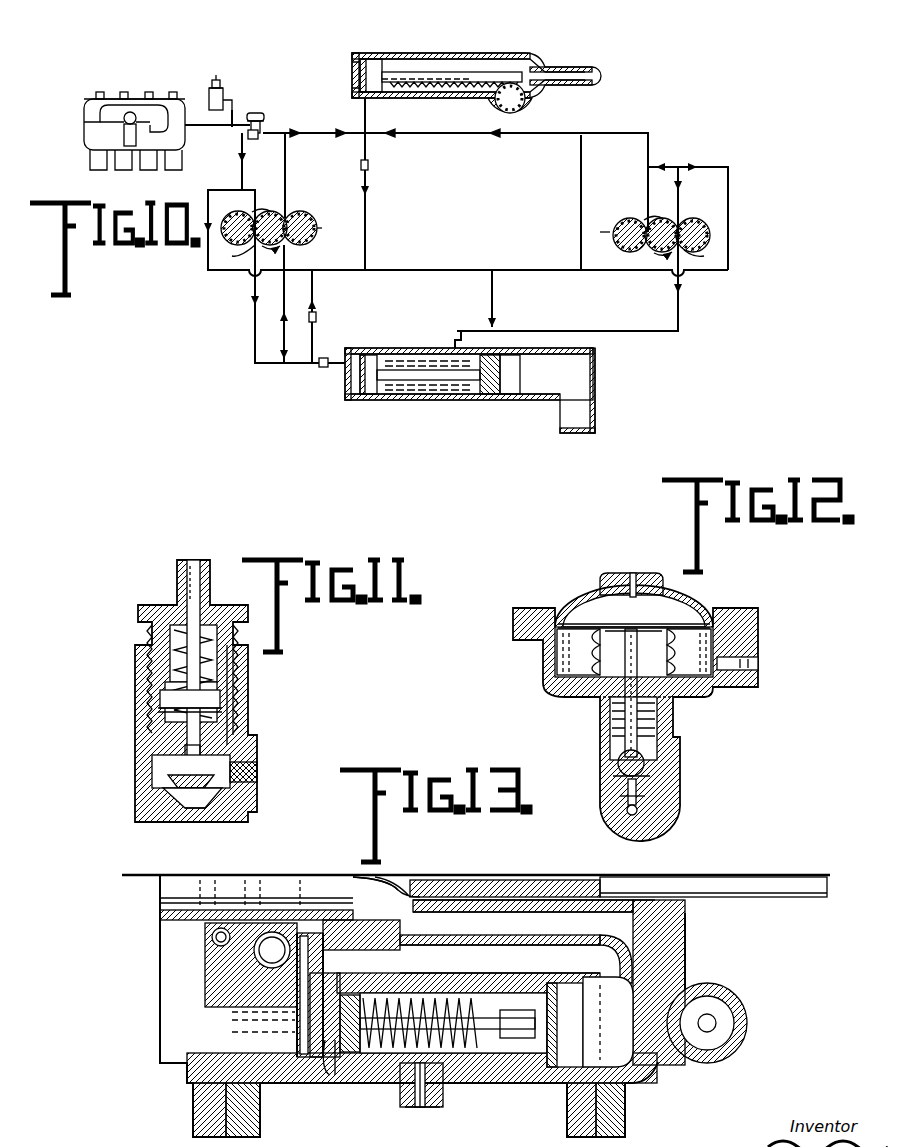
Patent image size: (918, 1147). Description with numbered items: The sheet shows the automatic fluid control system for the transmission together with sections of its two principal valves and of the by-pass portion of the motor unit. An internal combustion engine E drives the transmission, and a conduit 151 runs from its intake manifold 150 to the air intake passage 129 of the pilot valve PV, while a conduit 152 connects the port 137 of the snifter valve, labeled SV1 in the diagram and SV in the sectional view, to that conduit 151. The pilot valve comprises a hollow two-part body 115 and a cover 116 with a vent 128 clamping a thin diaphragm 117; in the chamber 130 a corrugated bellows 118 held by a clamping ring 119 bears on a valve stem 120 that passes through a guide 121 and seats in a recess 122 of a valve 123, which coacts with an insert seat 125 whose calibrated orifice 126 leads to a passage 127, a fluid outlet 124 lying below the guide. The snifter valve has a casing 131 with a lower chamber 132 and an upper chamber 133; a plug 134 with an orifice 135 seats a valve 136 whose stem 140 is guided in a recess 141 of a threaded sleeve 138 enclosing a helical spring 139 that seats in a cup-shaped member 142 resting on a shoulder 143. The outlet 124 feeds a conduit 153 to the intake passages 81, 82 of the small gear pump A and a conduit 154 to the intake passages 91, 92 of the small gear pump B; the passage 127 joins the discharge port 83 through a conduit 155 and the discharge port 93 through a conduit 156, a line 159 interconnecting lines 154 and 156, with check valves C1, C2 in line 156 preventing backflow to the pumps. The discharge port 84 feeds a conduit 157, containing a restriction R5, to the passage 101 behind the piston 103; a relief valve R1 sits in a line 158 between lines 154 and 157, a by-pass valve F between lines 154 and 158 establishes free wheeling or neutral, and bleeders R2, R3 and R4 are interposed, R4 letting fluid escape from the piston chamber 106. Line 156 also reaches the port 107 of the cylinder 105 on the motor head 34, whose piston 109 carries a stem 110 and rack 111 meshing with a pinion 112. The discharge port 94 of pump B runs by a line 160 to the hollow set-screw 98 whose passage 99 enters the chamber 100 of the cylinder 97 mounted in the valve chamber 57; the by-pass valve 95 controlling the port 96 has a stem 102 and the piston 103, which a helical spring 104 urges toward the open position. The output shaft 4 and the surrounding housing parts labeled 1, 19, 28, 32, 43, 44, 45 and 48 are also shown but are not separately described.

In FIG. 10, the intake manifold 150 is at (84, 122).
In FIG. 10, the prime mover E is at (110, 100).
In FIG. 10, the solenoid valve SV1 is at (202, 101).
In FIG. 10, the connection 137 is at (224, 92).
In FIG. 11, the connection 137 is at (257, 773).
In FIG. 10, the conduit 152 is at (231, 115).
In FIG. 10, the conduit 151 is at (206, 126).
In FIG. 10, the pilot valve PV is at (265, 119).
In FIG. 12, the pilot valve PV is at (512, 636).
In FIG. 10, the air intake passage 129 is at (250, 114).
In FIG. 12, the air intake passage 129 is at (758, 661).
In FIG. 10, the fluid outlet 124 is at (255, 140).
In FIG. 12, the fluid outlet 124 is at (675, 756).
In FIG. 10, the passage 127 is at (289, 134).
In FIG. 12, the passage 127 is at (610, 830).
In FIG. 10, the check valve C1 is at (348, 132).
In FIG. 10, the check valve C2 is at (388, 136).
In FIG. 10, the bleeder valve R4 is at (369, 165).
In FIG. 10, the line 159 is at (368, 224).
In FIG. 10, the conduit 155 is at (287, 163).
In FIG. 10, the conduit 153 is at (242, 178).
In FIG. 10, the intake passage 81 is at (248, 216).
In FIG. 10, the intake passage 82 is at (286, 246).
In FIG. 10, the discharge port 83 is at (294, 216).
In FIG. 10, the discharge port 84 is at (244, 252).
In FIG. 10, the small gear pump A is at (330, 227).
In FIG. 10, the conduit 157 is at (255, 324).
In FIG. 10, the line 158 is at (282, 302).
In FIG. 10, the by-pass valve F is at (316, 316).
In FIG. 10, the relief valve R1 is at (284, 364).
In FIG. 10, the restriction R5 is at (323, 358).
In FIG. 10, the conduit 154 is at (420, 272).
In FIG. 10, the conduit 156 is at (528, 134).
In FIG. 10, the relief valve R3 is at (651, 166).
In FIG. 10, the line 160 is at (576, 331).
In FIG. 10, the relief valve R2 is at (494, 318).
In FIG. 10, the small gear pump B is at (598, 228).
In FIG. 10, the discharge port 93 is at (640, 218).
In FIG. 10, the intake passage 92 is at (644, 250).
In FIG. 10, the intake passage 91 is at (684, 218).
In FIG. 10, the discharge port 94 is at (696, 252).
In FIG. 10, the cylinder 105 is at (418, 54).
In FIG. 13, the cylinder 105 is at (745, 1000).
In FIG. 10, the piston chamber 106 is at (370, 58).
In FIG. 10, the piston 109 is at (358, 73).
In FIG. 10, the connection 107 is at (368, 100).
In FIG. 10, the rack 111 is at (472, 72).
In FIG. 10, the stem 110 is at (426, 90).
In FIG. 10, the pinion 112 is at (532, 102).
In FIG. 10, the chamber 100 is at (354, 398).
In FIG. 13, the chamber 100 is at (360, 1060).
In FIG. 10, the port 96 is at (546, 408).
In FIG. 13, the port 96 is at (558, 1070).
In FIG. 10, the piston 103 is at (374, 352).
In FIG. 13, the piston 103 is at (342, 1060).
In FIG. 10, the by-pass valve 95 is at (503, 394).
In FIG. 13, the by-pass valve 95 is at (548, 1005).
In FIG. 10, the hollow set-screw 98 is at (455, 338).
In FIG. 13, the hollow set-screw 98 is at (406, 1100).
In FIG. 10, the fluid passage 101 is at (340, 367).
In FIG. 13, the fluid passage 101 is at (316, 1075).
In FIG. 11, the snifting valve SV is at (136, 646).
In FIG. 11, the threaded sleeve 138 is at (150, 668).
In FIG. 11, the helical spring 139 is at (222, 638).
In FIG. 11, the recess 141 is at (188, 577).
In FIG. 11, the shoulder 143 is at (185, 760).
In FIG. 11, the upper chamber 133 is at (240, 688).
In FIG. 11, the body 131 is at (230, 710).
In FIG. 11, the cup-shaped member 142 is at (162, 697).
In FIG. 11, the valve stem 140 is at (158, 712).
In FIG. 11, the lower chamber 132 is at (152, 773).
In FIG. 11, the valve 136 is at (172, 788).
In FIG. 11, the orifice 135 is at (185, 818).
In FIG. 11, the plug 134 is at (212, 818).
In FIG. 12, the cover 116 is at (700, 606).
In FIG. 12, the vent 128 is at (633, 573).
In FIG. 12, the diaphragm 117 is at (568, 620).
In FIG. 12, the chamber 130 is at (560, 662).
In FIG. 12, the corrugated metal bellows 118 is at (660, 646).
In FIG. 12, the clamping ring 119 is at (700, 693).
In FIG. 12, the body 115 is at (594, 725).
In FIG. 12, the valve stem 120 is at (660, 712).
In FIG. 12, the guide 121 is at (675, 736).
In FIG. 12, the recess 122 is at (617, 761).
In FIG. 12, the valve 123 is at (652, 777).
In FIG. 12, the calibrated orifice 126 is at (627, 793).
In FIG. 12, the seat 125 is at (648, 797).
In FIG. 13, the housing 1 is at (160, 1062).
In FIG. 13, the wall 28 is at (185, 1023).
In FIG. 13, the output shaft 4 is at (766, 878).
In FIG. 13, the plate 48 is at (520, 880).
In FIG. 13, the bend 32 is at (396, 878).
In FIG. 13, the strip 19 is at (160, 902).
In FIG. 13, the motor head 34 is at (685, 946).
In FIG. 13, the block 43 is at (228, 993).
In FIG. 13, the roller 45 is at (212, 940).
In FIG. 13, the roller 44 is at (245, 968).
In FIG. 13, the stem 102 is at (520, 1083).
In FIG. 13, the valve chamber 57 is at (455, 1060).
In FIG. 13, the cylinder 97 is at (372, 1060).
In FIG. 13, the passage 99 is at (422, 1100).
In FIG. 13, the helical spring 104 is at (395, 1110).